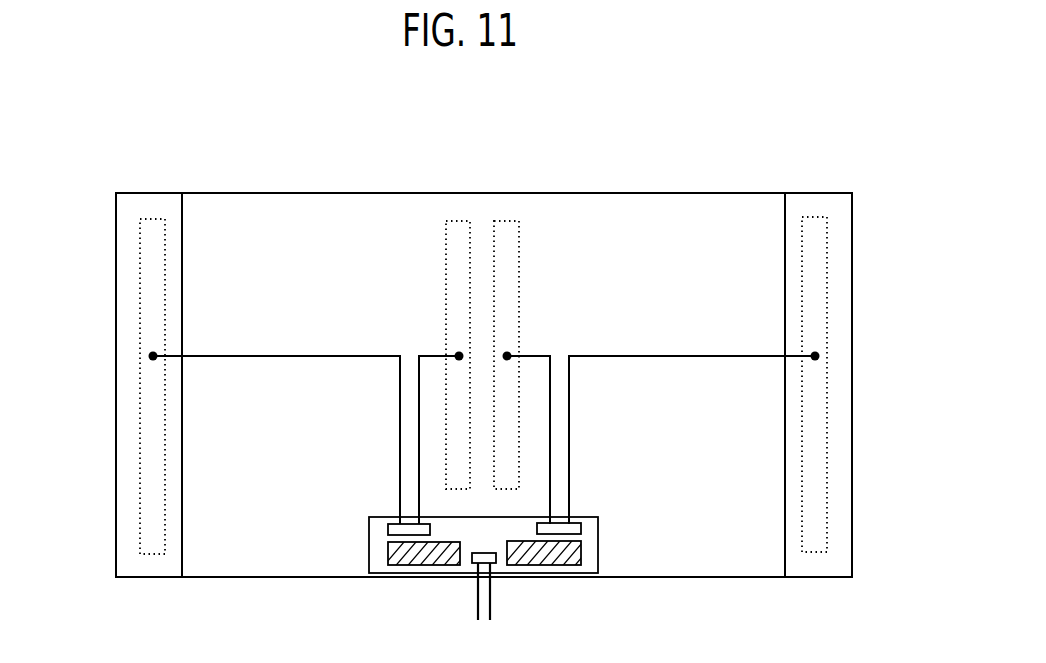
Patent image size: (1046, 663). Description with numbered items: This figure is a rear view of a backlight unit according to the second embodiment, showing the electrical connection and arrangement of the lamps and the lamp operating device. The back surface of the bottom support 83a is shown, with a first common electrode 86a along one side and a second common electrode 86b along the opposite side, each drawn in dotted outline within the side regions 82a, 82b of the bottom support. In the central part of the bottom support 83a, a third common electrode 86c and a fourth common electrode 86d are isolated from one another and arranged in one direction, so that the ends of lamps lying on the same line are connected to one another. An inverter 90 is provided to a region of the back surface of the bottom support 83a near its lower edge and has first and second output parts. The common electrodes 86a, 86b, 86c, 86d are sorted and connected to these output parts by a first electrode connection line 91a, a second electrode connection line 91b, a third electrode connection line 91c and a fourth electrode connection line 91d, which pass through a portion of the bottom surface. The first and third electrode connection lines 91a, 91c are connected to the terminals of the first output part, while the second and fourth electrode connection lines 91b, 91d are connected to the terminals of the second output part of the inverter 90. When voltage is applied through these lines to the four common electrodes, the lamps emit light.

The bottom support 83a is at (713, 193).
The first ground conductor 82a is at (128, 535).
The second ground conductor 82b is at (842, 481).
The first common electrode 86a is at (149, 479).
The second common electrode 86b is at (818, 426).
The third common electrode 86c is at (452, 228).
The fourth common electrode 86d is at (507, 228).
The first electrode connection line 91a is at (277, 356).
The second electrode connection line 91b is at (692, 356).
The third electrode connection line 91c is at (428, 356).
The fourth electrode connection line 91d is at (537, 356).
The inverter 90 is at (593, 532).